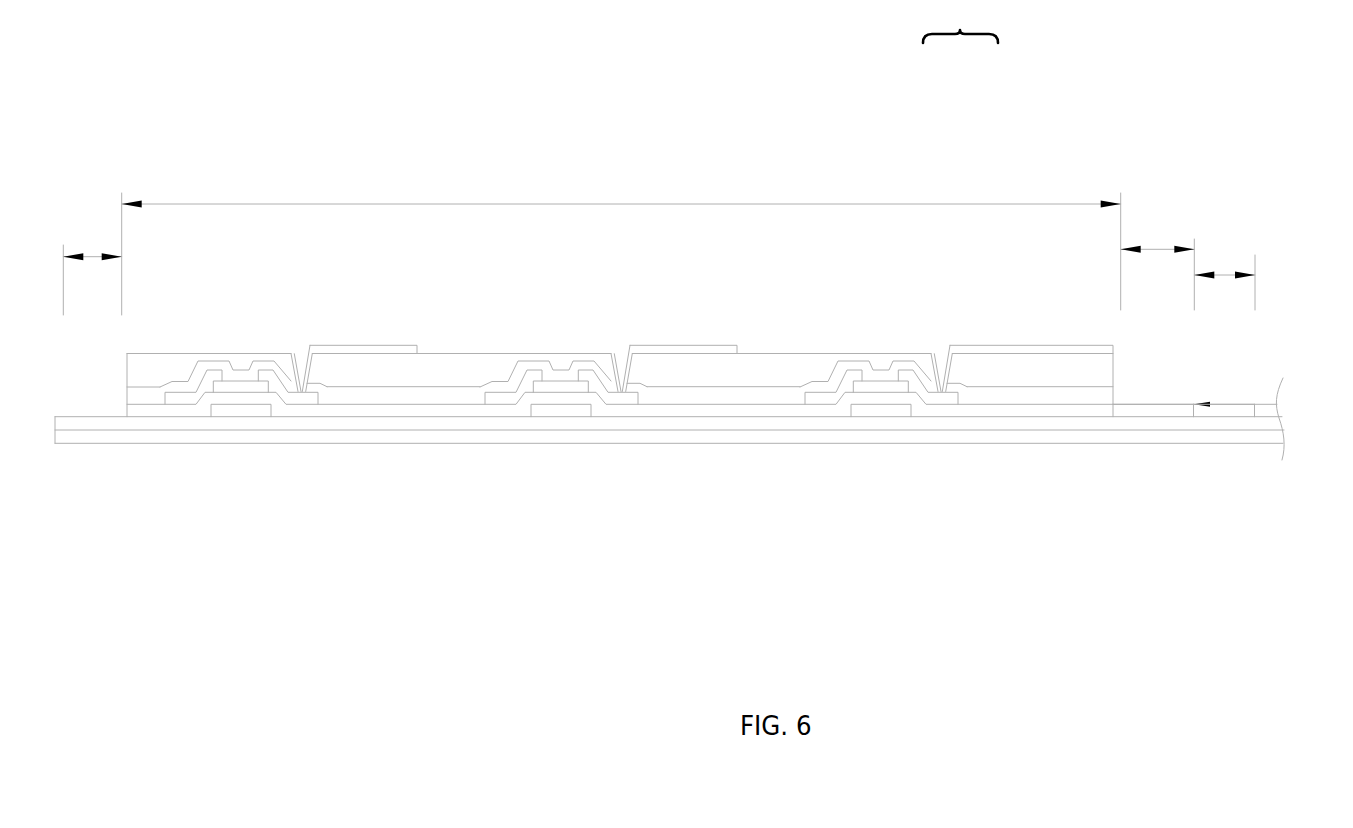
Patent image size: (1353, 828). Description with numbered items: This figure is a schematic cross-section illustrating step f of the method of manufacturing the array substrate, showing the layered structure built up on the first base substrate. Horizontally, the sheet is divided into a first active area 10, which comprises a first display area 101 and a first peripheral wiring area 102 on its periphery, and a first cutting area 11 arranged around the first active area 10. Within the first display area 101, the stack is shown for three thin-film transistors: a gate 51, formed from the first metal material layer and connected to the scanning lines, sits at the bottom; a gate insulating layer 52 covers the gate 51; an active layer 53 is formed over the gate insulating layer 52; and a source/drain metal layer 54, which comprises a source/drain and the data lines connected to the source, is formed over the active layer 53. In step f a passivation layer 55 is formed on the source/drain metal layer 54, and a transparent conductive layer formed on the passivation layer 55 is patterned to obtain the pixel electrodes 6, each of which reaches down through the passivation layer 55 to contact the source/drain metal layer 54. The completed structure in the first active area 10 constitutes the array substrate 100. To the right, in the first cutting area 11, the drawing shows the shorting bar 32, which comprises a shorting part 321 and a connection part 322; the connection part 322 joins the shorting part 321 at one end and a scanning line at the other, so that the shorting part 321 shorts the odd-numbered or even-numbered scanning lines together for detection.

The first active area 10 is at (960, 24).
The first display area 101 is at (754, 204).
The first peripheral wiring area 102 is at (94, 255).
The first cutting area 11 is at (1226, 274).
The gate 51 is at (543, 410).
The gate insulating layer 52 is at (558, 400).
The active layer 53 is at (563, 388).
The source/drain metal layer 54 is at (598, 387).
The passivation layer 55 is at (610, 387).
The pixel electrode 6 is at (647, 347).
The array substrate 100 is at (836, 444).
The shorting bar 32 is at (1243, 519).
The shorting part 321 is at (1223, 408).
The connection part 322 is at (1153, 408).